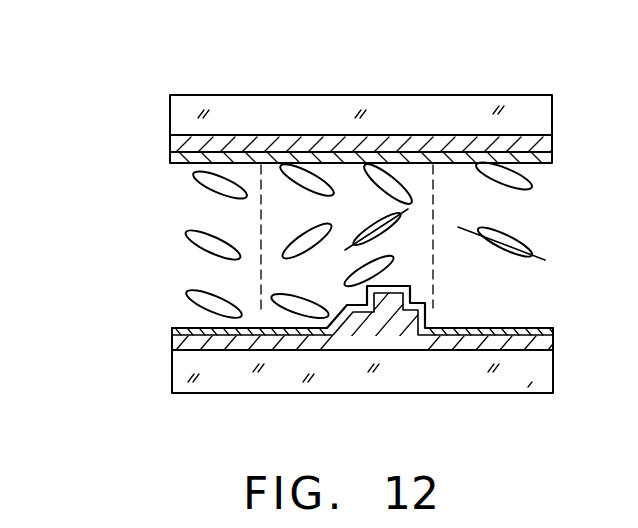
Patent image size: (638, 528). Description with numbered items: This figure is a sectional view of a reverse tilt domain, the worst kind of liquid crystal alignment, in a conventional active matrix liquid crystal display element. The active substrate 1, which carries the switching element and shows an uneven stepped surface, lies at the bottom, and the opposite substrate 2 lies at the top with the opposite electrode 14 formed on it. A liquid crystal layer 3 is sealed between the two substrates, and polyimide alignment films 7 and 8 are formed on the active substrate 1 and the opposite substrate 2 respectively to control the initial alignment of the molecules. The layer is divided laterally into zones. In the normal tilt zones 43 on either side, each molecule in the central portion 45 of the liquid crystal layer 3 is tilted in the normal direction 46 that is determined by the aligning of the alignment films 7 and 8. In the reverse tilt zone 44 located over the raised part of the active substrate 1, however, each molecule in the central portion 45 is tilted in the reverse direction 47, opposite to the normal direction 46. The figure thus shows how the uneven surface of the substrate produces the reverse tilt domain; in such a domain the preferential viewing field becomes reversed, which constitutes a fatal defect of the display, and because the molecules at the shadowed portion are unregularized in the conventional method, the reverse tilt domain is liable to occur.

The active substrate 1 is at (548, 369).
The opposite substrate 2 is at (552, 107).
The liquid crystal layer 3 is at (66, 167).
The alignment film 7 is at (534, 330).
The alignment film 8 is at (552, 160).
The opposite electrode 14 is at (552, 143).
The normal tilt zone 43 is at (252, 78).
The reverse tilt zone 44 is at (423, 78).
The central portion 45 is at (154, 203).
The normal direction 46 is at (473, 232).
The reverse direction 47 is at (374, 222).